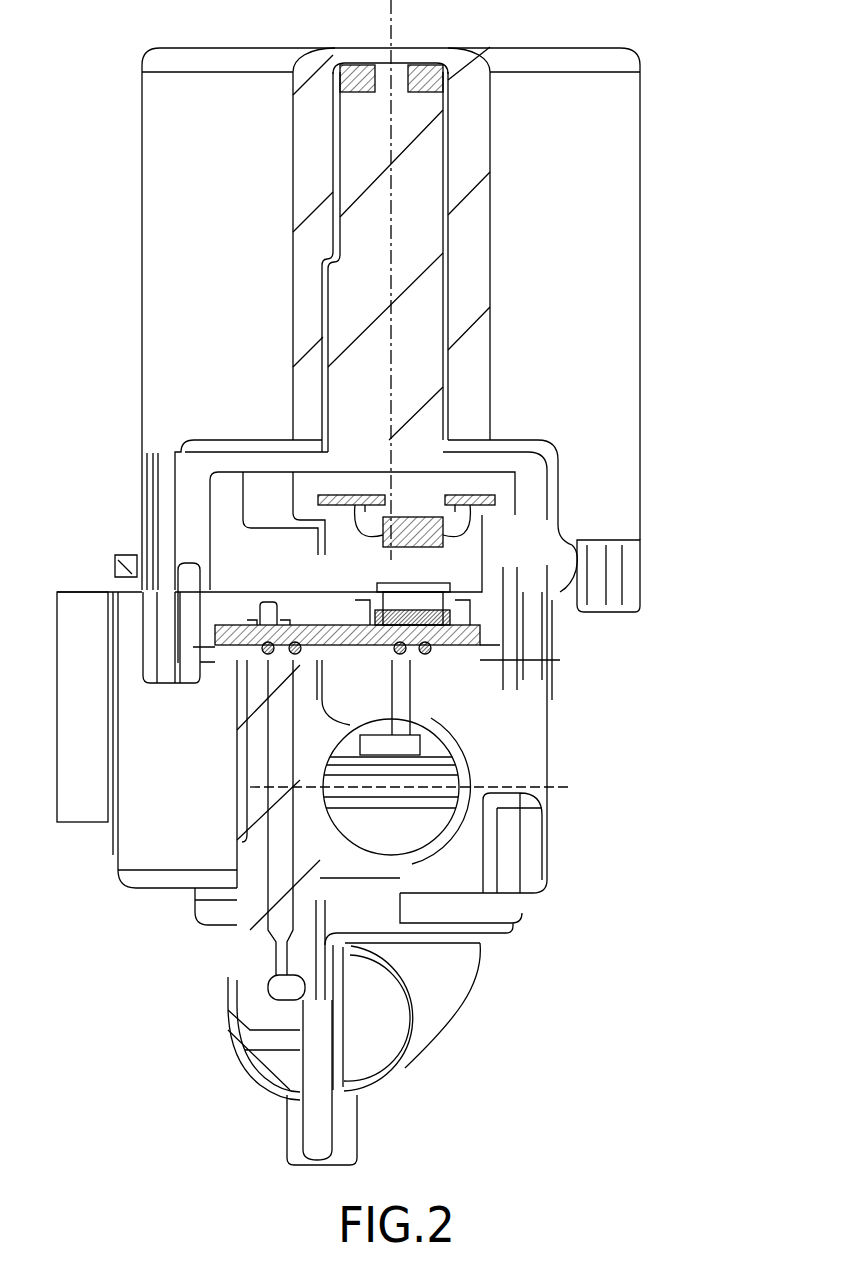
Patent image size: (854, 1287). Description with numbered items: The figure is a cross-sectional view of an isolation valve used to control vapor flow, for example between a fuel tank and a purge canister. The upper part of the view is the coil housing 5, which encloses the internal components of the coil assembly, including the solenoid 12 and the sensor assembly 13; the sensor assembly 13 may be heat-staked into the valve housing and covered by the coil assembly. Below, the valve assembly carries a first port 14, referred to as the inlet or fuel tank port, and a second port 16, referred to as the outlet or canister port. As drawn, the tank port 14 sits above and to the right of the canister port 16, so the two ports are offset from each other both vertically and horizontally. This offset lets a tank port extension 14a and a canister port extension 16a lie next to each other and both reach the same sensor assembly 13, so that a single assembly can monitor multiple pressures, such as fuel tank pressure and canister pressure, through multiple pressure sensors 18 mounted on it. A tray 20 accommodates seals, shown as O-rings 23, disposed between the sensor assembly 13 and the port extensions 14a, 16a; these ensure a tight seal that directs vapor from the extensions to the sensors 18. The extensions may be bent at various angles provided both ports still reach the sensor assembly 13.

The coil housing 5 is at (640, 158).
The solenoid 12 is at (590, 318).
The sensor assembly 13 is at (215, 613).
The first port 14 is at (443, 793).
The tank port extension 14a is at (413, 705).
The second port 16 is at (403, 1010).
The canister port extension 16a is at (280, 775).
The pressure sensors 18 is at (470, 612).
The tray 20 is at (505, 648).
The O-rings 23 is at (260, 651).